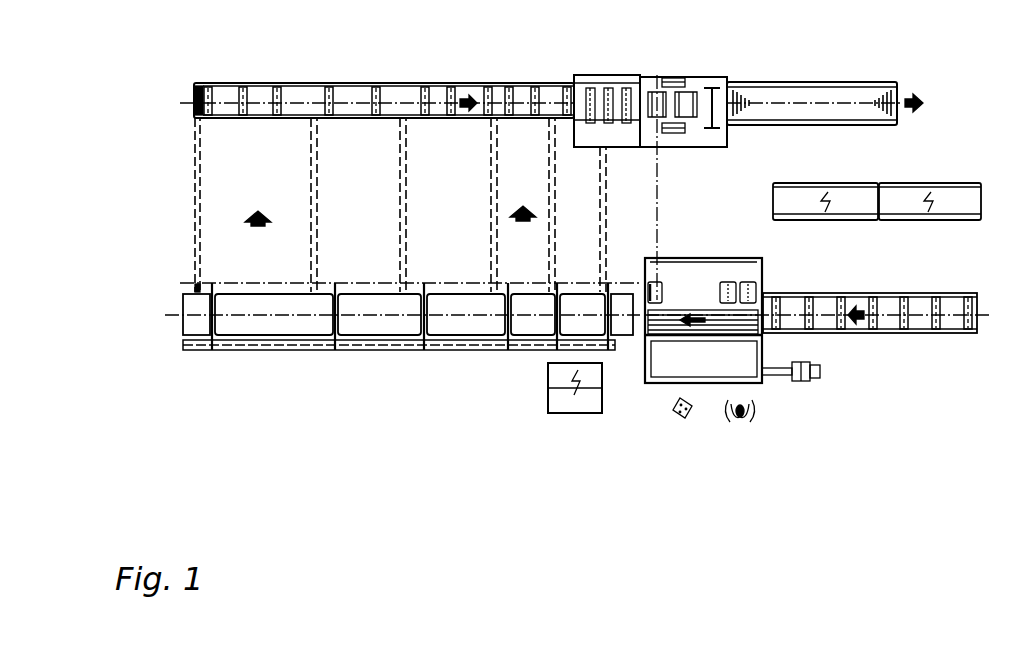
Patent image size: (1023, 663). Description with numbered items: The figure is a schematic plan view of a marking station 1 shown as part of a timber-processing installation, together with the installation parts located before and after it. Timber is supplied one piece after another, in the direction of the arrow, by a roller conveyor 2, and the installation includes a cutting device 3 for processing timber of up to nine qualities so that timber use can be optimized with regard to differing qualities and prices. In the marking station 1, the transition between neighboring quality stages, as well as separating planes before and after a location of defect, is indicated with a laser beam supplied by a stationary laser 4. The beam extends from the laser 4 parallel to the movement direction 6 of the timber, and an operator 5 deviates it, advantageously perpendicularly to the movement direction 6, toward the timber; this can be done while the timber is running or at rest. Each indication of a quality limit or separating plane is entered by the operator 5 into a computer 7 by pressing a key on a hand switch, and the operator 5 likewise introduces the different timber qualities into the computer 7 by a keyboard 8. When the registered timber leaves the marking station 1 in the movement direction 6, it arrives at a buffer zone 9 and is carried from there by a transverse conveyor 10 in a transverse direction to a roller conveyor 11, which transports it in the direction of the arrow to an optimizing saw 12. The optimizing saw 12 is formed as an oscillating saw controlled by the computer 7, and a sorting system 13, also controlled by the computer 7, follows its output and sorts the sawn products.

The marking station 1 is at (763, 387).
The roller conveyor 2 is at (925, 335).
The cutting device 3 is at (955, 164).
The stationary laser 4 is at (816, 373).
The operator 5 is at (745, 418).
The movement direction 6 is at (685, 318).
The computer 7 is at (590, 407).
The keyboard 8 is at (676, 418).
The buffer zone 9 is at (372, 342).
The transverse conveyor 10 is at (190, 198).
The roller conveyor 11 is at (431, 80).
The optimizing saw 12 is at (656, 75).
The sorting system 13 is at (849, 79).